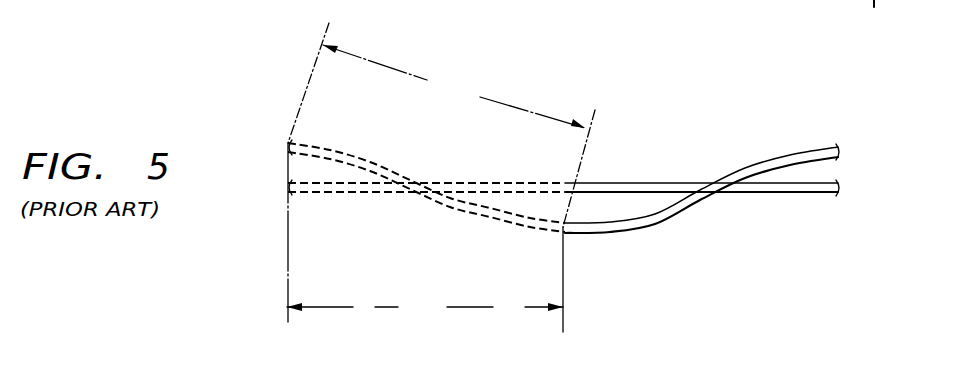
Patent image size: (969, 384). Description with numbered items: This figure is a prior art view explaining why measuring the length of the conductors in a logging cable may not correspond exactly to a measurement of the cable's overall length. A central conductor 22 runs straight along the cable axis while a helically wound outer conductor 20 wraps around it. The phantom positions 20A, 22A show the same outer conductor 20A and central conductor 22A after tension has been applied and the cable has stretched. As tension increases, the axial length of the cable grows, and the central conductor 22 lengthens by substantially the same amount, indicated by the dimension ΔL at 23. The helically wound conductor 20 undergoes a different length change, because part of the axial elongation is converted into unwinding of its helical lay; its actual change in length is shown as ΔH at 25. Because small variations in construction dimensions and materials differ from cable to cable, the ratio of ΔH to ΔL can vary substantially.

The helically wound conductor 20 is at (783, 156).
The central conductor 22 is at (783, 195).
The first conductor wire in untwisted/phantom position 20A is at (351, 155).
The second conductor wire in untwisted/phantom position 22A is at (344, 194).
The change in length of the central conductor (ΔL) 23 is at (337, 308).
The change in length of the outer conductor (ΔH) 25 is at (383, 62).